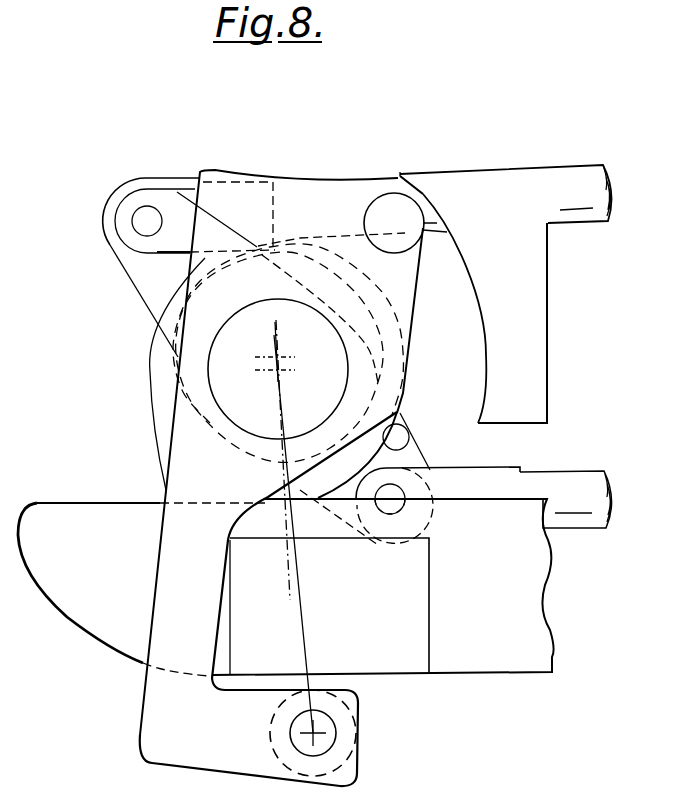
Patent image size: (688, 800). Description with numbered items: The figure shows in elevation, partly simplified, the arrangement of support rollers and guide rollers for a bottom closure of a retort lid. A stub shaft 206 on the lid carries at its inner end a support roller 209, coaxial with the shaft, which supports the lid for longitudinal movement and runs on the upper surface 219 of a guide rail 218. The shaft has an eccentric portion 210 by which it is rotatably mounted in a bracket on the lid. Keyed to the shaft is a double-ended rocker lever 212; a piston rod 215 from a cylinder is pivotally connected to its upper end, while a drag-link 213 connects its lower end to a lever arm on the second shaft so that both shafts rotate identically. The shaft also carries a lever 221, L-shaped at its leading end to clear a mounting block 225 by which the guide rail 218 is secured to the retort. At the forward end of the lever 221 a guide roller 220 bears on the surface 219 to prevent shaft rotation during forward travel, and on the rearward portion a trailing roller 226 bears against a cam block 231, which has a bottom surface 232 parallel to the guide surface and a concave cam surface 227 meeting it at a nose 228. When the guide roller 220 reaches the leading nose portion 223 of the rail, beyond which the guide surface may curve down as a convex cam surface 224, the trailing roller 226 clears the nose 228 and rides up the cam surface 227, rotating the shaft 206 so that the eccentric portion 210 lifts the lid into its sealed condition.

The stub shaft 206 is at (217, 387).
The support roller 209 is at (406, 431).
The eccentric portion 210 is at (193, 352).
The double-ended rocker lever 212 is at (150, 296).
The drag-link 213 is at (600, 528).
The piston rod 215 is at (583, 173).
The guide rail 218 is at (547, 645).
The upper surface 219 is at (508, 468).
The guide roller 220 is at (340, 745).
The lever 221 is at (140, 737).
The leading nose portion 223 is at (37, 503).
The convex cam surface 224 is at (121, 656).
The mounting block 225 is at (422, 676).
The trailing roller 226 is at (410, 203).
The concave cam surface 227 is at (487, 315).
The nose 228 is at (428, 422).
The cam block 231 is at (533, 305).
The bottom surface 232 is at (545, 424).